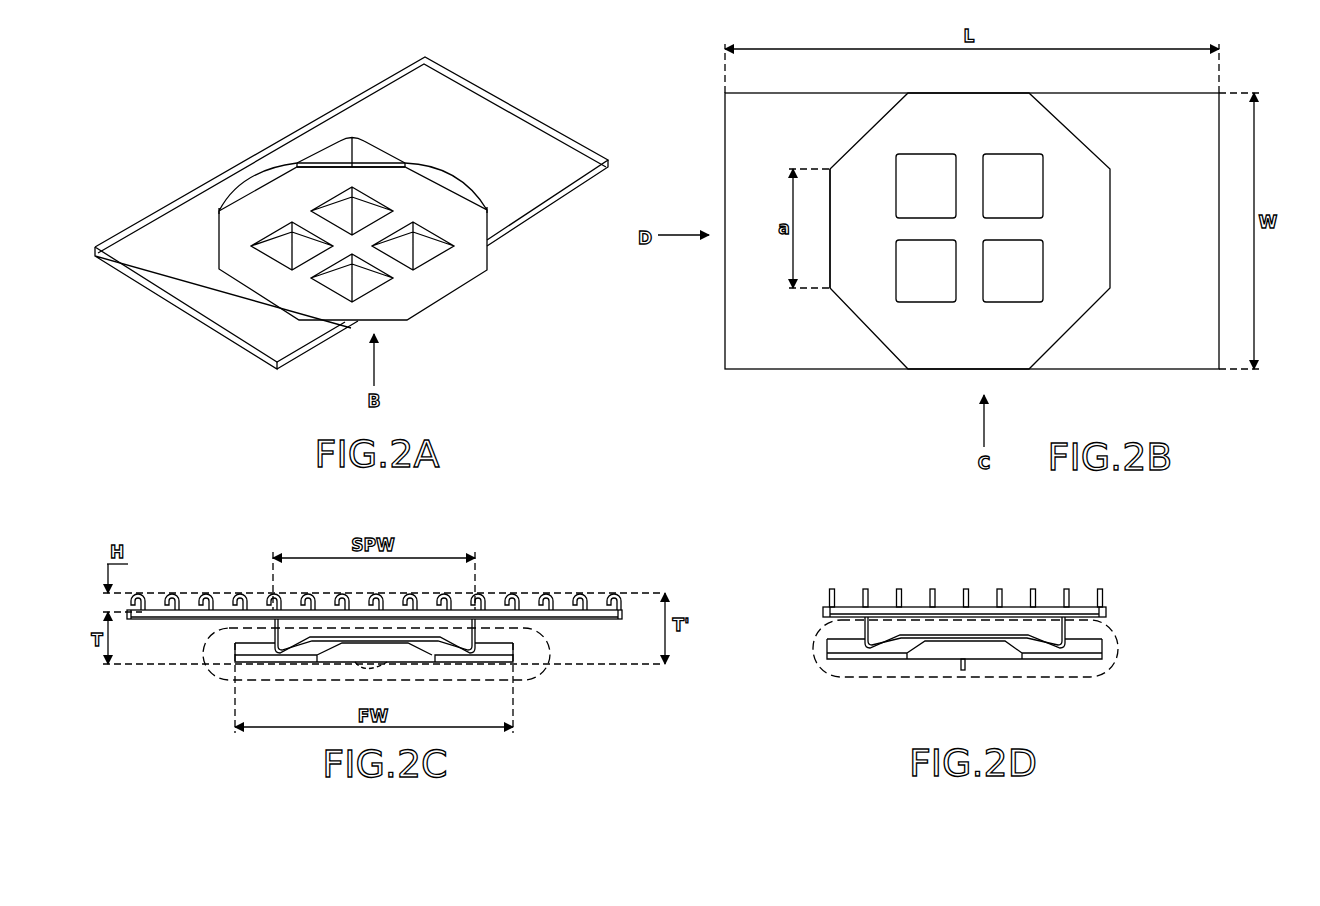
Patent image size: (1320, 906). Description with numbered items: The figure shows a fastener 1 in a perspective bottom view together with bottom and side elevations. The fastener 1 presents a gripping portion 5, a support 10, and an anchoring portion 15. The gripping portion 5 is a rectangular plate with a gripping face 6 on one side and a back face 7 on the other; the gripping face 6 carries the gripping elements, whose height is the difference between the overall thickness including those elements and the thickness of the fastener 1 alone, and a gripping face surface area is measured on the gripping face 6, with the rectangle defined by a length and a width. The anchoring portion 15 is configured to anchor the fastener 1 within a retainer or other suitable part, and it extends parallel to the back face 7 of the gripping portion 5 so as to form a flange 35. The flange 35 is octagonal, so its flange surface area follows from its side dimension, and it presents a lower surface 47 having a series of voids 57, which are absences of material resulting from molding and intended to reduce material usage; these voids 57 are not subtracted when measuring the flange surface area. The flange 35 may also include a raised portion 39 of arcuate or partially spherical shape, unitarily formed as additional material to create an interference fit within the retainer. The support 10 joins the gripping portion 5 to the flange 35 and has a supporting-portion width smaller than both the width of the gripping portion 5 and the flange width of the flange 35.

In FIG. 2A, the fastener 1 is at (147, 147).
In FIG. 2B, the fastener 1 is at (803, 396).
In FIG. 2C, the fastener 1 is at (188, 557).
In FIG. 2D, the fastener 1 is at (1133, 573).
In FIG. 2A, the gripping portion 5 is at (372, 86).
In FIG. 2B, the gripping portion 5 is at (972, 231).
In FIG. 2C, the gripping portion 5 is at (552, 597).
In FIG. 2D, the gripping portion 5 is at (964, 587).
In FIG. 2D, the gripping face 6 is at (852, 605).
In FIG. 2A, the back face 7 is at (444, 133).
In FIG. 2B, the back face 7 is at (1164, 130).
In FIG. 2C, the back face 7 is at (607, 620).
In FIG. 2D, the back face 7 is at (830, 620).
In FIG. 2A, the support 10 is at (333, 156).
In FIG. 2A, the anchoring portion 15 is at (374, 225).
In FIG. 2B, the anchoring portion 15 is at (974, 252).
In FIG. 2C, the anchoring portion 15 is at (383, 678).
In FIG. 2D, the anchoring portion 15 is at (984, 674).
In FIG. 2A, the flange 35 is at (473, 246).
In FIG. 2B, the flange 35 is at (962, 129).
In FIG. 2C, the flange 35 is at (503, 647).
In FIG. 2D, the flange 35 is at (1095, 638).
In FIG. 2C, the raised portion 39 is at (355, 668).
In FIG. 2D, the raised portion 39 is at (962, 667).
In FIG. 2B, the lower surface 47 is at (945, 343).
In FIG. 2A, the voids 57 is at (431, 242).
In FIG. 2B, the voids 57 is at (916, 196).